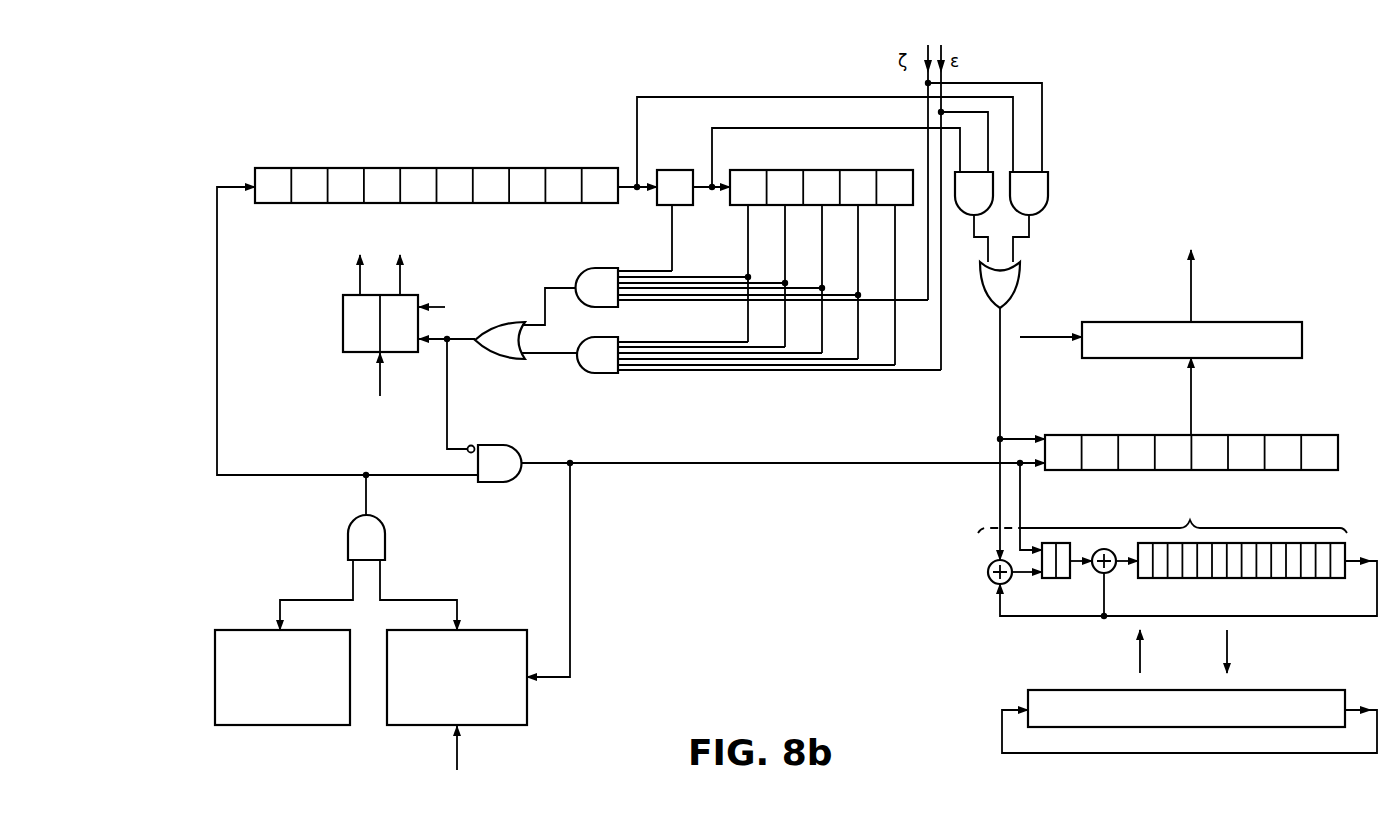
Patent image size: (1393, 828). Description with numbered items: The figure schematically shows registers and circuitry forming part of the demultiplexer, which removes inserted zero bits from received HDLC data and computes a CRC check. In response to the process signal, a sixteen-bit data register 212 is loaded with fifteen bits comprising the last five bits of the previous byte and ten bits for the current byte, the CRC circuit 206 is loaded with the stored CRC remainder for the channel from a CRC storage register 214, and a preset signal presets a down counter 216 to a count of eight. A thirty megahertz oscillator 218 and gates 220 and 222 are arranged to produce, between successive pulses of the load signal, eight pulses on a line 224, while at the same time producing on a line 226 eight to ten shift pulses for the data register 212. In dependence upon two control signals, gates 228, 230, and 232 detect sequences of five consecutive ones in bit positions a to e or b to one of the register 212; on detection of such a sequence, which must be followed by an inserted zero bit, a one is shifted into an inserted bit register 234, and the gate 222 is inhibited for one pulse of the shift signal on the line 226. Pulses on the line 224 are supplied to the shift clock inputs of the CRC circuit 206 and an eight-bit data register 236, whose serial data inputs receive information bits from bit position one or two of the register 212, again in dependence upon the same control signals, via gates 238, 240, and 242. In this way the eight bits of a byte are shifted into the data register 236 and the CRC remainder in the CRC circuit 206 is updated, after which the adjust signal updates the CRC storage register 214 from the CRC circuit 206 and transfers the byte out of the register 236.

The CRC circuit 206 is at (1288, 531).
The data register 212 is at (407, 163).
The CRC storage register 214 is at (1040, 690).
The down counter 216 is at (487, 630).
The 30 MHz oscillator 218 is at (308, 726).
The gate 220 is at (387, 536).
The gate 222 is at (500, 444).
The line 224 is at (760, 461).
The line 226 is at (218, 421).
The gate 228 is at (590, 374).
The gate 230 is at (601, 267).
The gate 232 is at (492, 362).
The inserted bit register 234 is at (343, 327).
The eight-bit data register 236 is at (1092, 434).
The gate 238 is at (960, 218).
The gate 240 is at (1050, 186).
The gate 242 is at (1020, 280).